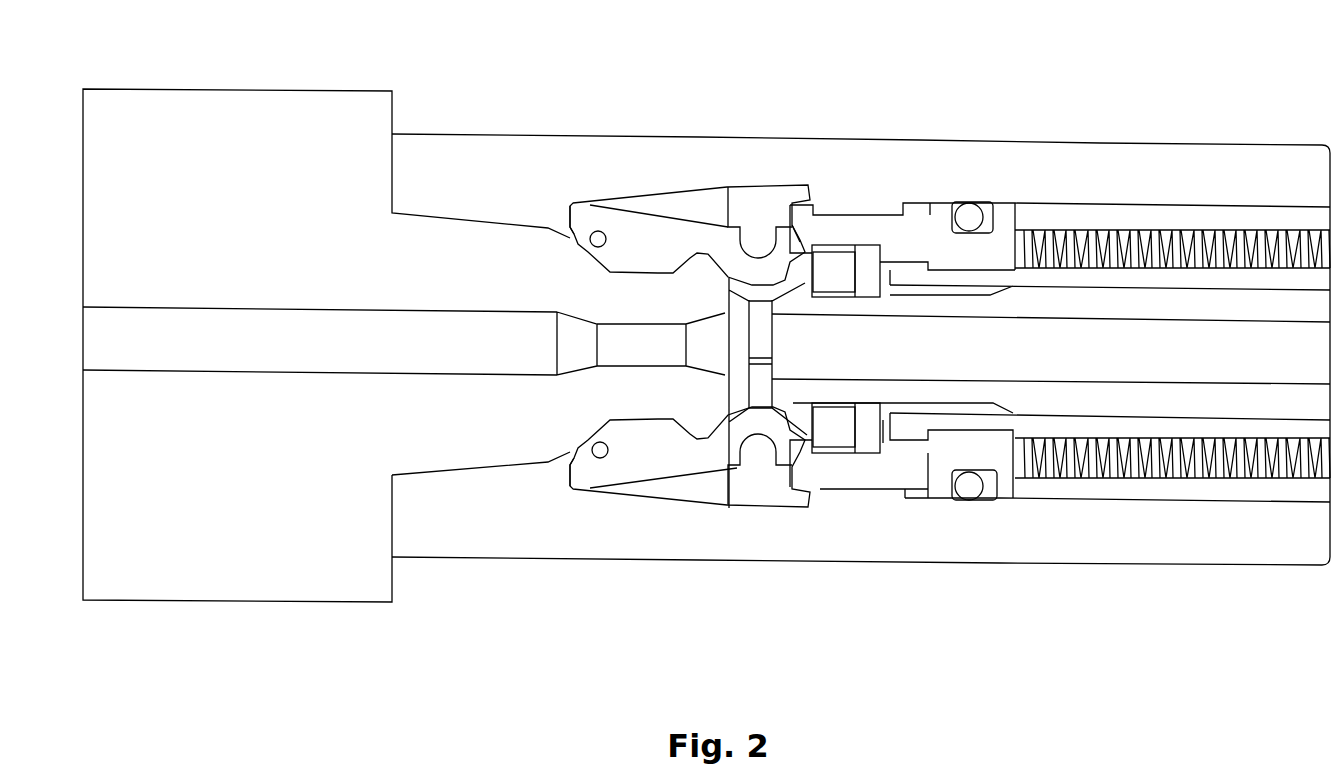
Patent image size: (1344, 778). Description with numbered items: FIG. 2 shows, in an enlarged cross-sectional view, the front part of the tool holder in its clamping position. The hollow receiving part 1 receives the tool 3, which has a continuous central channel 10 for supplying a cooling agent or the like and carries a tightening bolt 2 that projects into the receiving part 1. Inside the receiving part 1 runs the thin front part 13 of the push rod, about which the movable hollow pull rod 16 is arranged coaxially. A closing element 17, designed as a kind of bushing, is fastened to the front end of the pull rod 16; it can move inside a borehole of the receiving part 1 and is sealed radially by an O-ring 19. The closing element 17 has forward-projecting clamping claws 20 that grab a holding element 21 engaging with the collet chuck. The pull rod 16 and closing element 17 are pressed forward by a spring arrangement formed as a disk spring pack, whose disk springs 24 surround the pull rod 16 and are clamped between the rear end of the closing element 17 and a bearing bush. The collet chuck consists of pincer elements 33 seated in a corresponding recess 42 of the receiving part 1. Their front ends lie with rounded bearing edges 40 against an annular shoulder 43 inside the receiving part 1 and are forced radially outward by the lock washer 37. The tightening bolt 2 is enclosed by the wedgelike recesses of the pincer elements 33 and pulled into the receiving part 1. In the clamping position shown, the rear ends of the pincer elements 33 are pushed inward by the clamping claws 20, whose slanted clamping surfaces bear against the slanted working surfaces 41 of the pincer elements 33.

The hollow receiving part 1 is at (998, 168).
The tightening bolt 2 is at (703, 447).
The tool 3 is at (212, 107).
The central channel 10 is at (222, 357).
The thin front part 13 is at (1087, 397).
The hollow pull rod 16 is at (1192, 425).
The closing element 17 is at (947, 450).
The O-ring 19 is at (970, 490).
The clamping claws 20 is at (822, 210).
The holding element 21 is at (798, 207).
The disk springs 24 is at (1140, 235).
The pincer elements 33 is at (640, 213).
The lock washer 37 is at (597, 244).
The rounded bearing edge 40 is at (572, 204).
The slanted working surface 41 is at (878, 212).
The recess 42 is at (698, 200).
The annular shoulder 43 is at (580, 490).